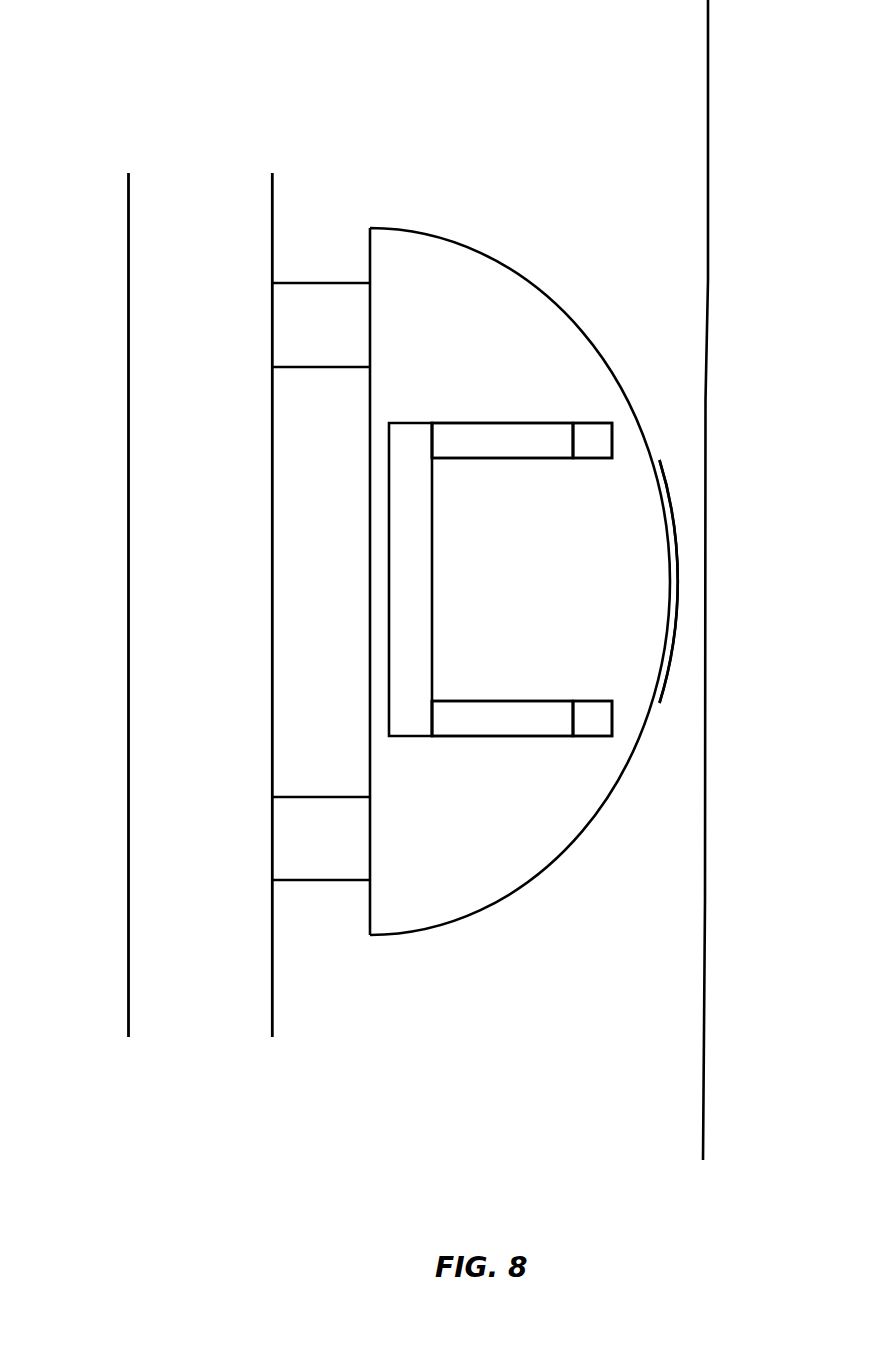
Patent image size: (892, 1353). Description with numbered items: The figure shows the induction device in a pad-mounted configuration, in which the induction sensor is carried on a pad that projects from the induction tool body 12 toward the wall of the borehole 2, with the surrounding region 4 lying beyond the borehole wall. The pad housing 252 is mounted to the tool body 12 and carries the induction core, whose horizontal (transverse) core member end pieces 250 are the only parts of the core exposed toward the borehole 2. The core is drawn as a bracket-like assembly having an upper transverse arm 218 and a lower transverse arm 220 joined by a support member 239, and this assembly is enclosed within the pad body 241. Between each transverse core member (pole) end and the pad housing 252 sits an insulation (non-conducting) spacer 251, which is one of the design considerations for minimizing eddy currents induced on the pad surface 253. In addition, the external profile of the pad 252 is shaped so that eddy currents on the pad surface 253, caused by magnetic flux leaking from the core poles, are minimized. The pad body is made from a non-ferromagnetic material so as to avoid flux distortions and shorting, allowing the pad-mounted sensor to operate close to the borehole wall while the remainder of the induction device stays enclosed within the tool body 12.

The borehole 2 is at (708, 303).
The formation / annulus 4 is at (802, 337).
The induction tool body 12 is at (127, 990).
The upper arm 218 is at (485, 433).
The lower arm 220 is at (445, 728).
The support member 239 is at (423, 603).
The pad 241 is at (485, 902).
The core member end pieces 250 is at (477, 450).
The insulation spacers 251 is at (580, 453).
The pad housing 252 is at (638, 524).
The pad surface 253 is at (671, 551).